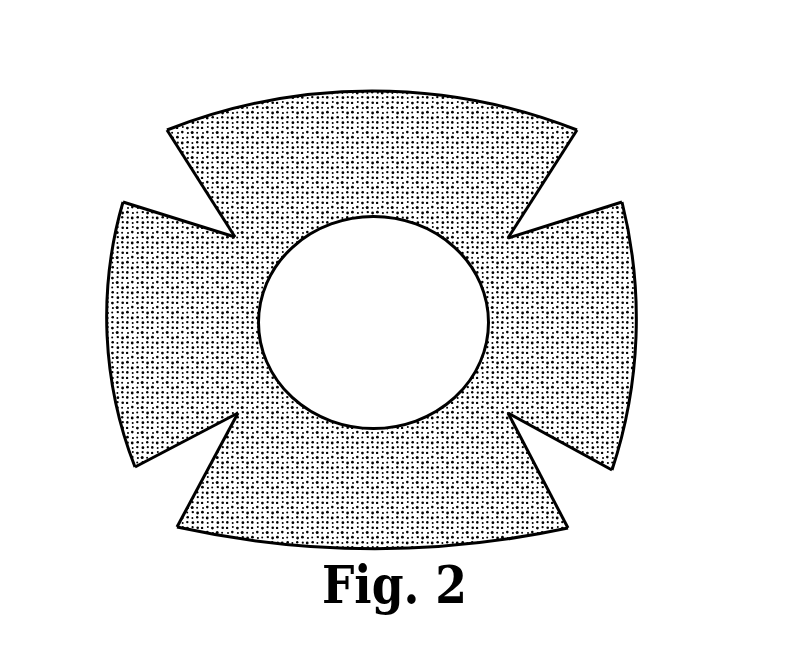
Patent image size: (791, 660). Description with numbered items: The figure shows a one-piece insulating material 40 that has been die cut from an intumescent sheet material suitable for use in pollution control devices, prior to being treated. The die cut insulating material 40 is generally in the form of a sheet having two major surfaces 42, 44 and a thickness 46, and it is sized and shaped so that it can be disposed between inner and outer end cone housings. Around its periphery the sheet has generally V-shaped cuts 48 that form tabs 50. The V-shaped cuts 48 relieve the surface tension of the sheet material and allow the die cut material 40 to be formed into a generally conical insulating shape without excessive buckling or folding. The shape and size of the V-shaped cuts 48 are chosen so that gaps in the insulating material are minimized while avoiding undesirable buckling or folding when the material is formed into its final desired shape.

The insulating material 40 is at (632, 341).
The major surface 42 is at (452, 115).
The major surface 44 is at (280, 265).
The thickness 46 is at (117, 403).
The V-shaped cut 48 is at (582, 187).
The tab 50 is at (110, 283).